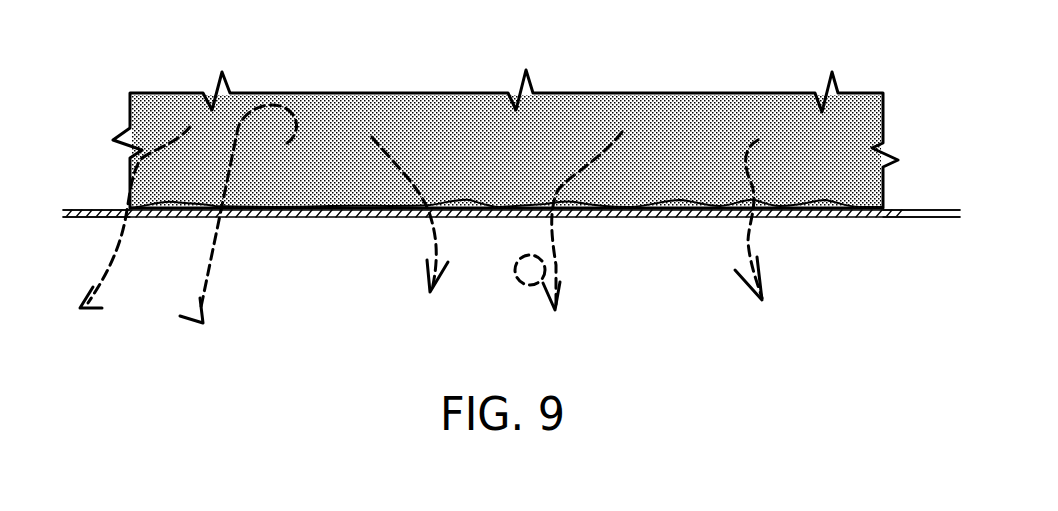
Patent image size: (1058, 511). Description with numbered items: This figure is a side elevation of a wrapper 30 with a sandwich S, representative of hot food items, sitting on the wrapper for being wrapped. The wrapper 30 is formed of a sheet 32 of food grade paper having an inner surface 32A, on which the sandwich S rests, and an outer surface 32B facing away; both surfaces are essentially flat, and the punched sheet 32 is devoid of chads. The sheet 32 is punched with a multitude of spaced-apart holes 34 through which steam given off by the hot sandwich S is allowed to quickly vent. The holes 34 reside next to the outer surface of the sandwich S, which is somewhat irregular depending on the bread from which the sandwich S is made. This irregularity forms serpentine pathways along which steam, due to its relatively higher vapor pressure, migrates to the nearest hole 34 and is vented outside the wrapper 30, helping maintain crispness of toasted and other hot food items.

The wrapper 30 is at (325, 78).
The sandwich S is at (683, 117).
The sheet 32 is at (585, 217).
The inner surface 32A is at (97, 210).
The outer surface 32B is at (930, 218).
The holes 34 is at (130, 217).